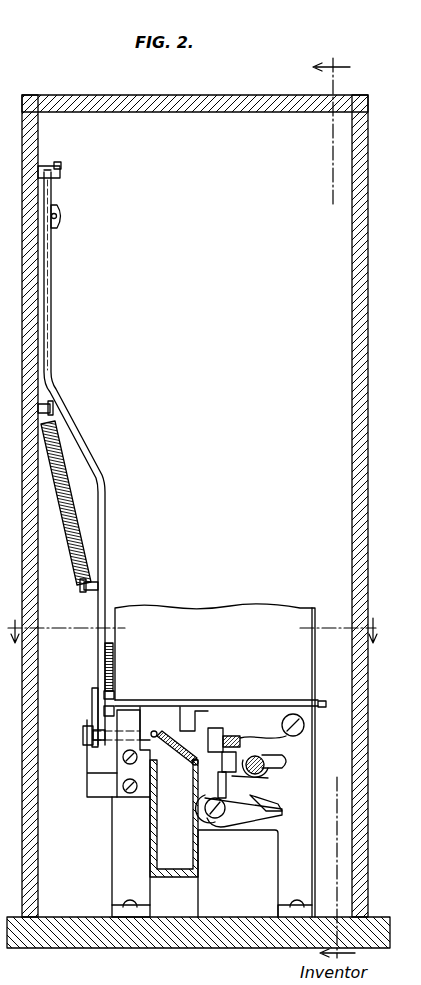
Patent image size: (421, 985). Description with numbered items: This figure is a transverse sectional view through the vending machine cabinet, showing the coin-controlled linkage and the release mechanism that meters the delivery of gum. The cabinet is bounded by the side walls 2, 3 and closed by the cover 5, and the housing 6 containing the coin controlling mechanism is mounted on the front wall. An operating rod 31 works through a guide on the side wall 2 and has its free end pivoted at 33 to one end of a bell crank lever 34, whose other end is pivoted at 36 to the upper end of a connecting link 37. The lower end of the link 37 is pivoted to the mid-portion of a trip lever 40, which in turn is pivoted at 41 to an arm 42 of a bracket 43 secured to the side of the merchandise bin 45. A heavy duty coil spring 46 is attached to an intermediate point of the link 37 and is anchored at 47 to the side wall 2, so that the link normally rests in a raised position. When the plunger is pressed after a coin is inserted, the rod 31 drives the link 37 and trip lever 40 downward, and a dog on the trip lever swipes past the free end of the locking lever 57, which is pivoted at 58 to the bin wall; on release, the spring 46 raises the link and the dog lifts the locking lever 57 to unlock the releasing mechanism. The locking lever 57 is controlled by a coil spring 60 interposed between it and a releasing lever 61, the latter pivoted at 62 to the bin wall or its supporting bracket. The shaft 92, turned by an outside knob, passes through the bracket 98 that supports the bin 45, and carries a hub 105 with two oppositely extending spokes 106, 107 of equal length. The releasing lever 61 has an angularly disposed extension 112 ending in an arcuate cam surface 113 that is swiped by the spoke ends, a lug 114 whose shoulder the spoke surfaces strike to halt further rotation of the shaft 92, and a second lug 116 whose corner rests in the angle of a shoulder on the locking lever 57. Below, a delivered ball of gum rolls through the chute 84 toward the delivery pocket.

The side wall 2 is at (22, 366).
The side wall 3 is at (334, 505).
The cover 5 is at (221, 98).
The housing 6 is at (194, 630).
The rod 31 is at (63, 213).
The pivot 33 is at (60, 222).
The bell crank lever 34 is at (66, 178).
The pivot 36 is at (61, 167).
The connecting link 37 is at (52, 366).
The trip lever 40 is at (95, 705).
The pivot 41 is at (83, 735).
The arm 42 is at (87, 755).
The bracket 43 is at (105, 790).
The merchandise bin 45 is at (310, 672).
The heavy duty coil spring 46 is at (80, 524).
The spring attachment 47 is at (53, 409).
The locking lever 57 is at (193, 722).
The pivot 58 is at (291, 714).
The coil spring 60 is at (160, 732).
The releasing lever 61 is at (220, 788).
The pivot 62 is at (222, 816).
The chute 84 is at (192, 866).
The shaft 92 is at (260, 756).
The bracket 98 is at (288, 876).
The hub 105 is at (258, 775).
The spoke 106 is at (226, 765).
The spoke 107 is at (283, 765).
The extension 112 is at (262, 815).
The arcuate cam surface 113 is at (272, 802).
The lug 114 is at (232, 745).
The second lug 116 is at (218, 728).